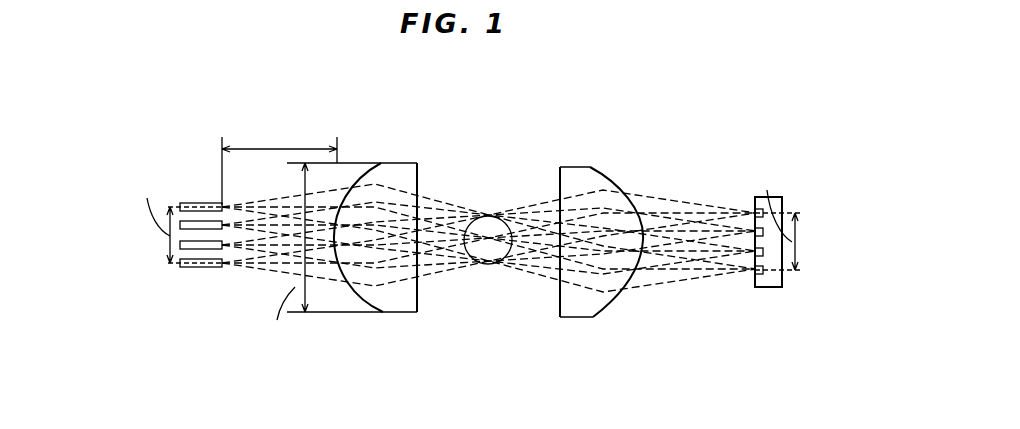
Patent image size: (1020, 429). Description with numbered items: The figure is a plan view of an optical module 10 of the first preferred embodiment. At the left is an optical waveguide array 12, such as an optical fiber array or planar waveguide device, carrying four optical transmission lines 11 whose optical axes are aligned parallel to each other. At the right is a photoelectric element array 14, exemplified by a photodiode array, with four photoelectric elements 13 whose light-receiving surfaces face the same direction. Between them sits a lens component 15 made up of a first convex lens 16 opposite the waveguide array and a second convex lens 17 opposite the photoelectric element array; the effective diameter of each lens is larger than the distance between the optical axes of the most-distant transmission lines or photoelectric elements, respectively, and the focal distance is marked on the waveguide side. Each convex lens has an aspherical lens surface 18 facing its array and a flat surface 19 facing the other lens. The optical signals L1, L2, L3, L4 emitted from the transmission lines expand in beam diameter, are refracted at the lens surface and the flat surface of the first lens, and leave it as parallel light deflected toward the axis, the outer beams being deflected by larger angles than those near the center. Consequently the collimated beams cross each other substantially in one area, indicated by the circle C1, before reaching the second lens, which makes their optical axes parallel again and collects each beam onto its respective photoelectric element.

The optical module 10 is at (537, 110).
The optical transmission line 11 is at (193, 253).
The optical waveguide array 12 is at (148, 282).
The photoelectric element 13 is at (752, 256).
The photoelectric element array 14 is at (772, 296).
The lens component 15 is at (627, 160).
The first convex lens 16 is at (397, 172).
The second convex lens 17 is at (578, 177).
The aspherical lens surface 18 is at (357, 178).
The flat surface 19 is at (417, 188).
The circle C1 is at (490, 215).
The optical signal L1 is at (256, 201).
The optical signal L2 is at (258, 222).
The optical signal L3 is at (245, 250).
The optical signal L4 is at (276, 268).